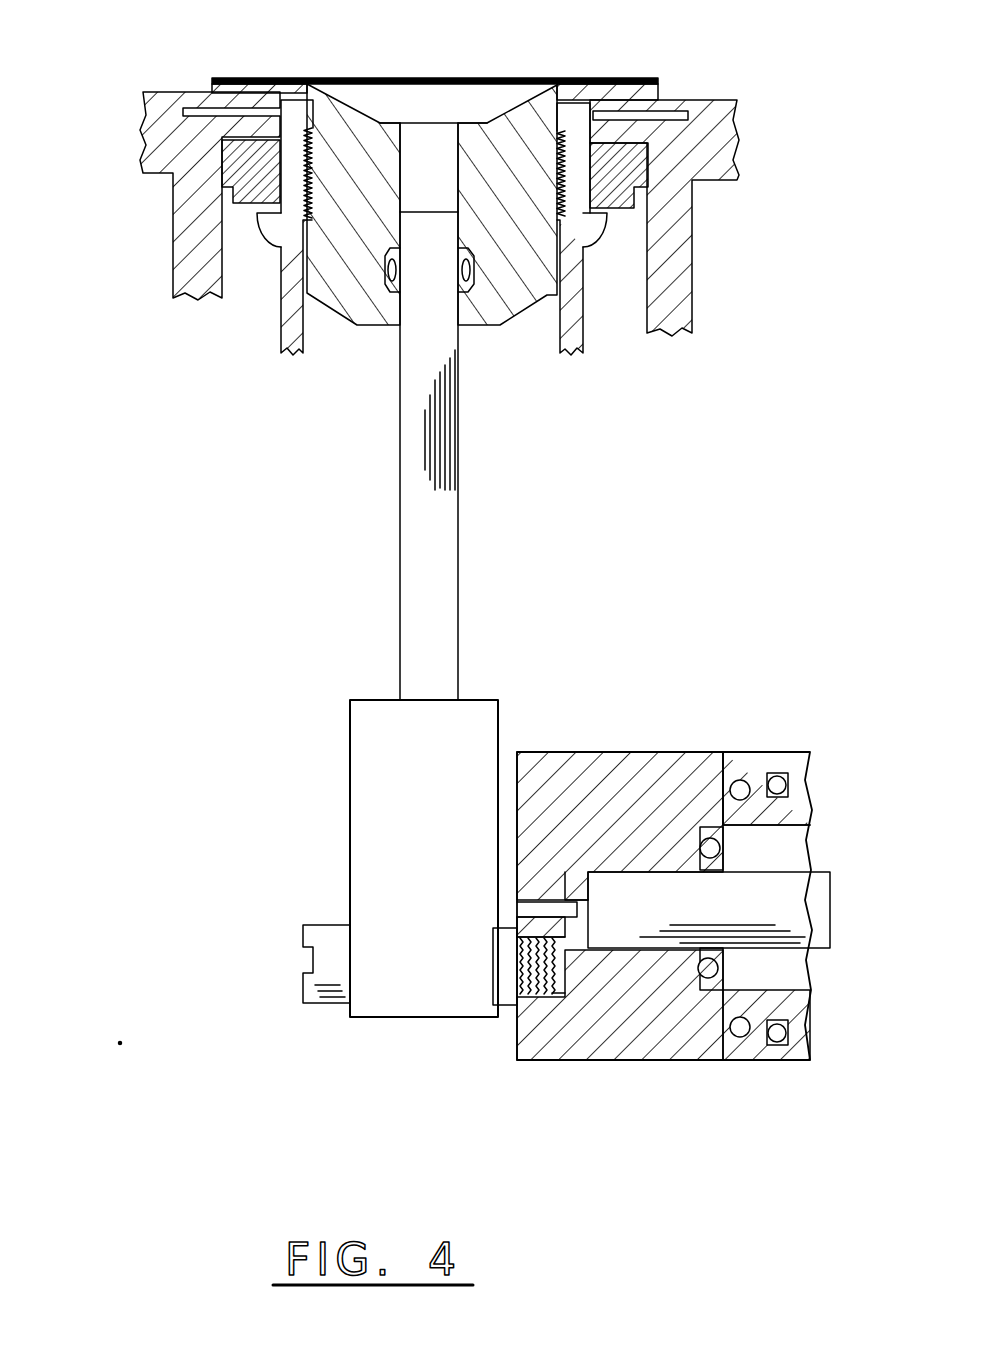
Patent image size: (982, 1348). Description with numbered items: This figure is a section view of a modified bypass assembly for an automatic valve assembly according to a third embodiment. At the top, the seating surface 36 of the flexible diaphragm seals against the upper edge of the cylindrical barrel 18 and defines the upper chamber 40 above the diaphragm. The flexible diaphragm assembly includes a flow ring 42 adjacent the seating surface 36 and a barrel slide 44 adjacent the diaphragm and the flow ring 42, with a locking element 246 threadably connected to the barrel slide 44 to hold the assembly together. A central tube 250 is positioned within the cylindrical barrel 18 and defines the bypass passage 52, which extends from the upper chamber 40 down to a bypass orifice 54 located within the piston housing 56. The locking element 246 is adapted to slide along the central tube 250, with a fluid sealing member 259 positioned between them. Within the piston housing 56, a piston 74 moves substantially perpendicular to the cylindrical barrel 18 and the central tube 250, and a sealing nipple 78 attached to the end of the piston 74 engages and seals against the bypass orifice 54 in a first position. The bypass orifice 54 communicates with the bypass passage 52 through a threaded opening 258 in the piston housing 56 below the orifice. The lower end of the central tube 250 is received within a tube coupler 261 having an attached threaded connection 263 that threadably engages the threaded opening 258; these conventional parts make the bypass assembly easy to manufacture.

The upper chamber 40 is at (446, 42).
The bypass passage 52 is at (432, 212).
The seating surface 36 is at (667, 152).
The flow ring 42 is at (650, 200).
The cylindrical barrel 18 is at (193, 258).
The fluid sealing member 259 is at (385, 290).
The locking element 246 is at (495, 307).
The barrel slide 44 is at (580, 322).
The central tube 250 is at (458, 550).
The tube coupler 261 is at (452, 827).
The bypass orifice 54 is at (545, 900).
The piston housing 56 is at (687, 780).
The sealing nipple 78 is at (583, 897).
The piston 74 is at (786, 920).
The threaded connection 263 is at (507, 1007).
The threaded opening 258 is at (547, 1005).